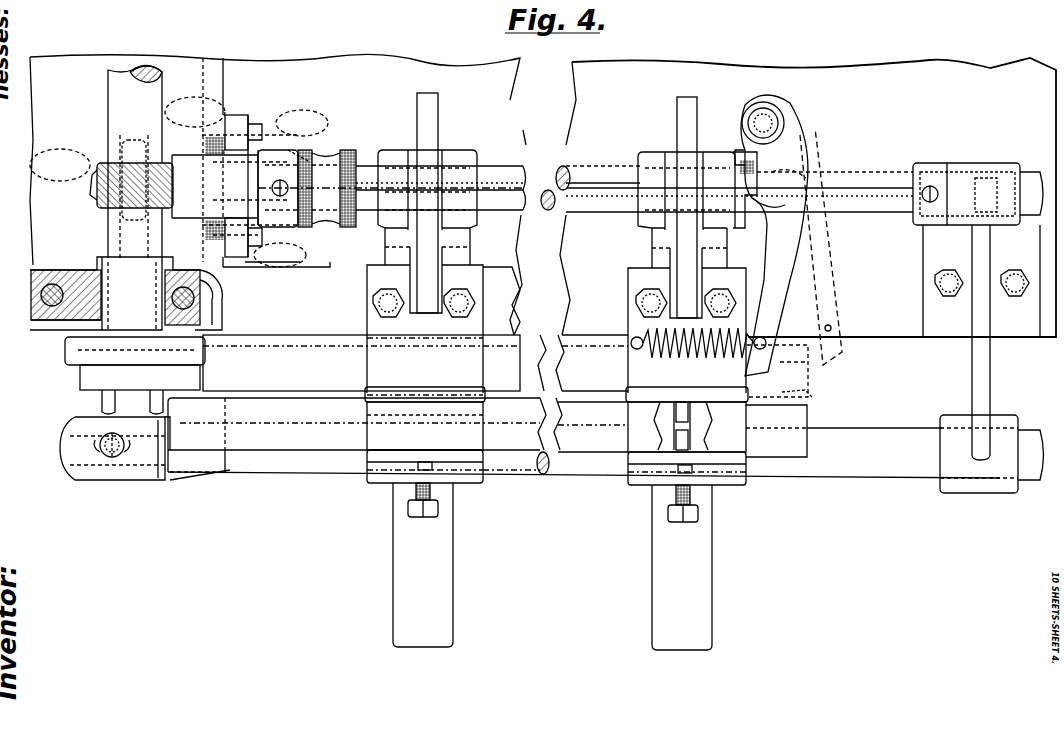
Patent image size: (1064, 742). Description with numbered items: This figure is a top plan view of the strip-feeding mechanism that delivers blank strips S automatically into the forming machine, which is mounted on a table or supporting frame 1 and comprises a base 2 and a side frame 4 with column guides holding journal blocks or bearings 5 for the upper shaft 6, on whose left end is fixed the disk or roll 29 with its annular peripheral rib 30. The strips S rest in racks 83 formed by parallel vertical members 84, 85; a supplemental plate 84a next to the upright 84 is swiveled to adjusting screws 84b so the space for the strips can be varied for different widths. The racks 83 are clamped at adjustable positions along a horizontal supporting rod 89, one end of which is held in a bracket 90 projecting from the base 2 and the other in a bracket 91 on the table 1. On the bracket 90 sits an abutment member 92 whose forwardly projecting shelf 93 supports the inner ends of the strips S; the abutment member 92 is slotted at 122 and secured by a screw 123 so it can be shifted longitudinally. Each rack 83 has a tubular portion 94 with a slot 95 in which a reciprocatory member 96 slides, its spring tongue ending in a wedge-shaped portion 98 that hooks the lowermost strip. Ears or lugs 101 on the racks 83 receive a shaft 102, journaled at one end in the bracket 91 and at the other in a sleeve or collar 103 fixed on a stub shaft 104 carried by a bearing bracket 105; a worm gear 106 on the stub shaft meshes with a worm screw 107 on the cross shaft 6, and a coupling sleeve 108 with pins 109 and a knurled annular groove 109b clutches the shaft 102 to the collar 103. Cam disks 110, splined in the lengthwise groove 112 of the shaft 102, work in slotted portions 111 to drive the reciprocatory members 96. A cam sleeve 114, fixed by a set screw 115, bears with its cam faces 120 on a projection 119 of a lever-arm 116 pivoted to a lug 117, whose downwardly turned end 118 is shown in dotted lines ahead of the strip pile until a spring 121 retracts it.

The table or supporting frame 1 is at (342, 66).
The base 2 is at (38, 203).
The side frame 4 is at (36, 286).
The journal blocks or bearings 5 is at (126, 293).
The upper shaft 6 is at (118, 108).
The disk or roll 29 is at (82, 380).
The annular peripheral rib 30 is at (80, 362).
The rack 83 is at (556, 329).
The vertical member (upright) 84 is at (382, 475).
The supplemental plate 84a is at (452, 455).
The adjusting screws 84b is at (428, 505).
The vertical member 85 is at (428, 396).
The horizontal supporting rod 89 is at (508, 470).
The bracket 90 is at (78, 420).
The bracket 91 is at (977, 358).
The abutment member 92 is at (167, 478).
The horizontal shelf 93 is at (182, 455).
The tubular portion 94 is at (400, 552).
The slot 95 is at (694, 422).
The reciprocatory member 96 is at (684, 442).
The wedge-shaped end portion 98 is at (696, 440).
The ears or lugs 101 is at (392, 240).
The shaft 102 is at (534, 176).
The sleeve or collar 103 is at (270, 154).
The stub shaft 104 is at (186, 165).
The bearing bracket 105 is at (192, 197).
The worm gear 106 is at (138, 140).
The worm screw 107 is at (110, 193).
The coupling sleeve or collar 108 is at (348, 152).
The clutch portion or pins 109 is at (285, 150).
The peripheral annular groove 109b is at (326, 210).
The cam disks 110 is at (432, 146).
The slotted portions 111 is at (440, 282).
The lengthwise groove 112 is at (600, 188).
The cam collar or sleeve 114 is at (742, 220).
The set screw 115 is at (745, 135).
The lever-arm 116 is at (780, 265).
The lug 117 is at (772, 106).
The downwardly turned end 118 is at (764, 353).
The lug or projection 119 is at (806, 224).
The cam faces 120 is at (777, 170).
The spring 121 is at (660, 350).
The slot 122 is at (100, 450).
The screw 123 is at (114, 450).
The blank strips S is at (490, 403).